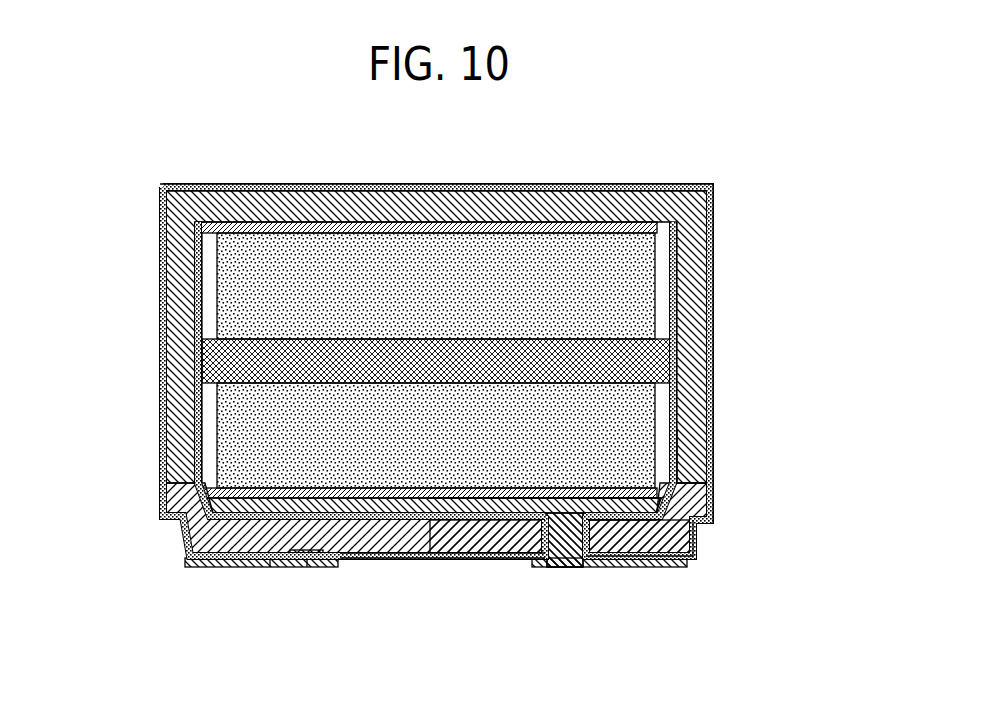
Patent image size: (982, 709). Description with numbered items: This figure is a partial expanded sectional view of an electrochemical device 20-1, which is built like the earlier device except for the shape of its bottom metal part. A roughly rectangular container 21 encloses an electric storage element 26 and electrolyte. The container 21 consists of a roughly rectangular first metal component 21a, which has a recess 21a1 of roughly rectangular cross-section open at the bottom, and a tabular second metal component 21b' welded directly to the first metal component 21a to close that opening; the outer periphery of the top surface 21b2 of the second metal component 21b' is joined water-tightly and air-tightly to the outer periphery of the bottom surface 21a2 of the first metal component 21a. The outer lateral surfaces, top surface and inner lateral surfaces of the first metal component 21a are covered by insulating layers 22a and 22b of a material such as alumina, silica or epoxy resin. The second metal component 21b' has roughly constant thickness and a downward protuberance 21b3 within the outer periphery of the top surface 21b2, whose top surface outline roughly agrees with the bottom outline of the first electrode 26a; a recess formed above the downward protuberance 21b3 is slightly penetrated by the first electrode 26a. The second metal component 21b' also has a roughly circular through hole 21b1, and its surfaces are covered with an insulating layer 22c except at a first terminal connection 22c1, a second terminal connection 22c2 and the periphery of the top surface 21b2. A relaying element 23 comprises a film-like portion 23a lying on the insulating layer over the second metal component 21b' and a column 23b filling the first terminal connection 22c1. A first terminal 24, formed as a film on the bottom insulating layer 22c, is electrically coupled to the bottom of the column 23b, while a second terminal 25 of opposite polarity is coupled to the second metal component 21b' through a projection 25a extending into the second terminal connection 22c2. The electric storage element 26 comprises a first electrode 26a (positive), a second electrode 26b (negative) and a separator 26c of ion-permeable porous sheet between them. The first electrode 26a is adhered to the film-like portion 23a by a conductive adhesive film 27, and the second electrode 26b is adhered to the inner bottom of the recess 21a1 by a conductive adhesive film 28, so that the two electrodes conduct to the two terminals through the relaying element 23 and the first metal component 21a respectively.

The electrochemical device 20-1 is at (214, 184).
The container 21 is at (417, 372).
The first metal component 21a is at (172, 450).
The recess 21a1 is at (207, 408).
The bottom surface 21a2 is at (697, 477).
The second metal component 21b' is at (312, 518).
The through hole 21b1 is at (523, 555).
The top surface 21b2 is at (697, 500).
The downward protuberance 21b3 is at (623, 567).
The insulating layer 22a is at (162, 285).
The insulating layer 22b is at (167, 318).
The insulating layer 22c is at (350, 558).
The first terminal connection 22c1 is at (578, 565).
The second terminal connection 22c2 is at (268, 560).
The relaying element 23 is at (395, 558).
The film-like portion 23a is at (462, 555).
The column 23b is at (562, 560).
The first terminal 24 is at (673, 567).
The second terminal 25 is at (192, 565).
The projection 25a is at (307, 560).
The electric storage element 26 is at (525, 360).
The first electrode 26a is at (506, 435).
The second electrode 26b is at (630, 287).
The separator 26c is at (632, 358).
The conductive adhesive film 27 is at (430, 558).
The conductive adhesive film 28 is at (428, 222).